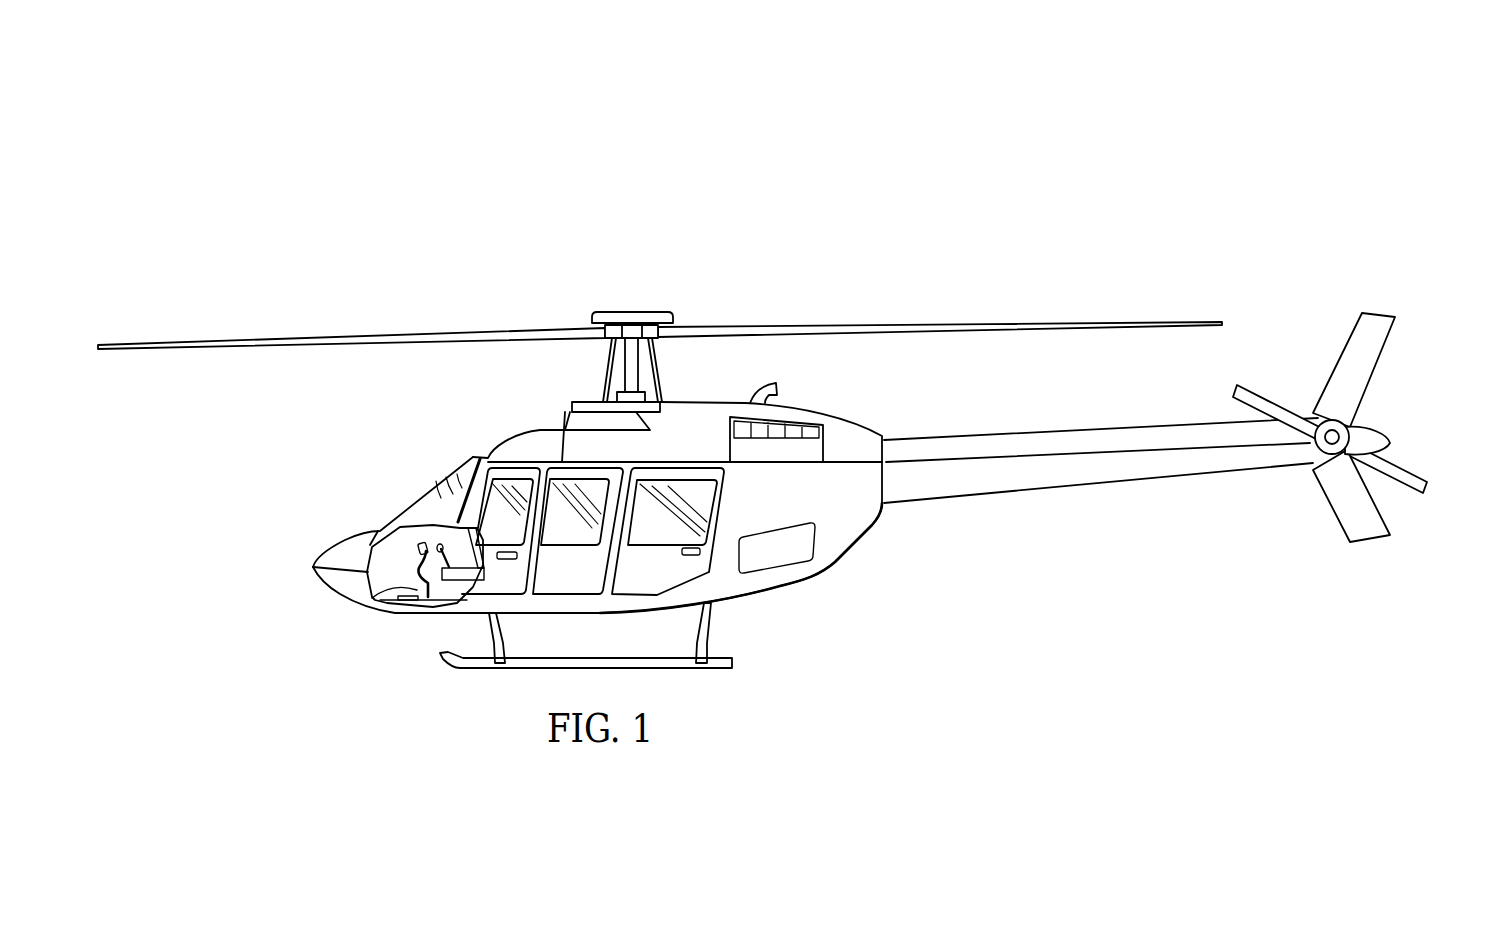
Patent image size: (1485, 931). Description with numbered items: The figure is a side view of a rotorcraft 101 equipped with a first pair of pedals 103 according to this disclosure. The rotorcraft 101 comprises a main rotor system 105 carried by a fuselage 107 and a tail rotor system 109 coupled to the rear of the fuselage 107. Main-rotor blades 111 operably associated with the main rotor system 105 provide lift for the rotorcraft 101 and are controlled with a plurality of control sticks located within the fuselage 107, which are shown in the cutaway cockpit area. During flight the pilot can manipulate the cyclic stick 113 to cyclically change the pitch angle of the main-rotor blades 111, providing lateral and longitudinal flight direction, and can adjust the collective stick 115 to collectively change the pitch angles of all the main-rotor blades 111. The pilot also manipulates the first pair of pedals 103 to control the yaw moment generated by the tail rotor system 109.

The rotorcraft 101 is at (450, 190).
The first pair of pedals 103 is at (385, 590).
The main rotor system 105 is at (605, 280).
The fuselage 107 is at (470, 466).
The tail rotor system 109 is at (1418, 345).
The main-rotor blades 111 is at (828, 325).
The cyclic stick 113 is at (413, 553).
The collective stick 115 is at (441, 546).